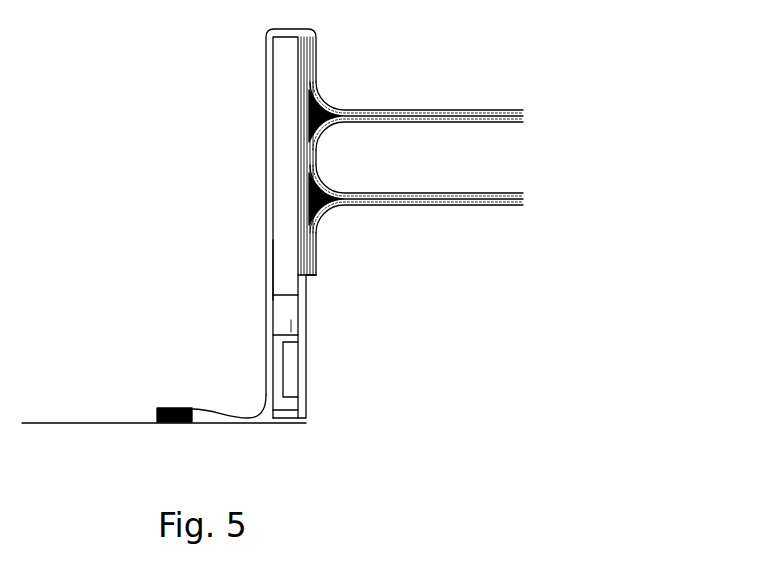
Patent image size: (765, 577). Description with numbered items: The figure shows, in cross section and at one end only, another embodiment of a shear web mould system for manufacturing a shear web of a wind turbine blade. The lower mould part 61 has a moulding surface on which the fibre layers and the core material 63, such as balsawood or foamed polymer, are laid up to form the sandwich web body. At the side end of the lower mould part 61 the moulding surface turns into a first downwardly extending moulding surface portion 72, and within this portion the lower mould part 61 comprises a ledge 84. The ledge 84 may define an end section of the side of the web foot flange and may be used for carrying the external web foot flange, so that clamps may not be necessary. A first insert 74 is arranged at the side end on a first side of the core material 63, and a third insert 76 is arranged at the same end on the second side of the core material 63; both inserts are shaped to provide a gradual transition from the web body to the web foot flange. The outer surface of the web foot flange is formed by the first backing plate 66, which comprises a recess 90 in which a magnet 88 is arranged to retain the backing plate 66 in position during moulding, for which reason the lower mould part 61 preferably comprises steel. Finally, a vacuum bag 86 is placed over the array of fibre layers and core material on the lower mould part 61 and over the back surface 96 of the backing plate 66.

The lower mould part 61 is at (407, 208).
The core material 63 is at (377, 152).
The first backing plate 66 is at (283, 52).
The first downwardly extending moulding surface portion 72 is at (320, 238).
The first insert 74 is at (312, 197).
The third insert 76 is at (310, 116).
The ledge 84 is at (307, 287).
The vacuum bag 86 is at (265, 126).
The magnet 88 is at (284, 324).
The recess 90 is at (291, 332).
The back surface 96 is at (272, 270).